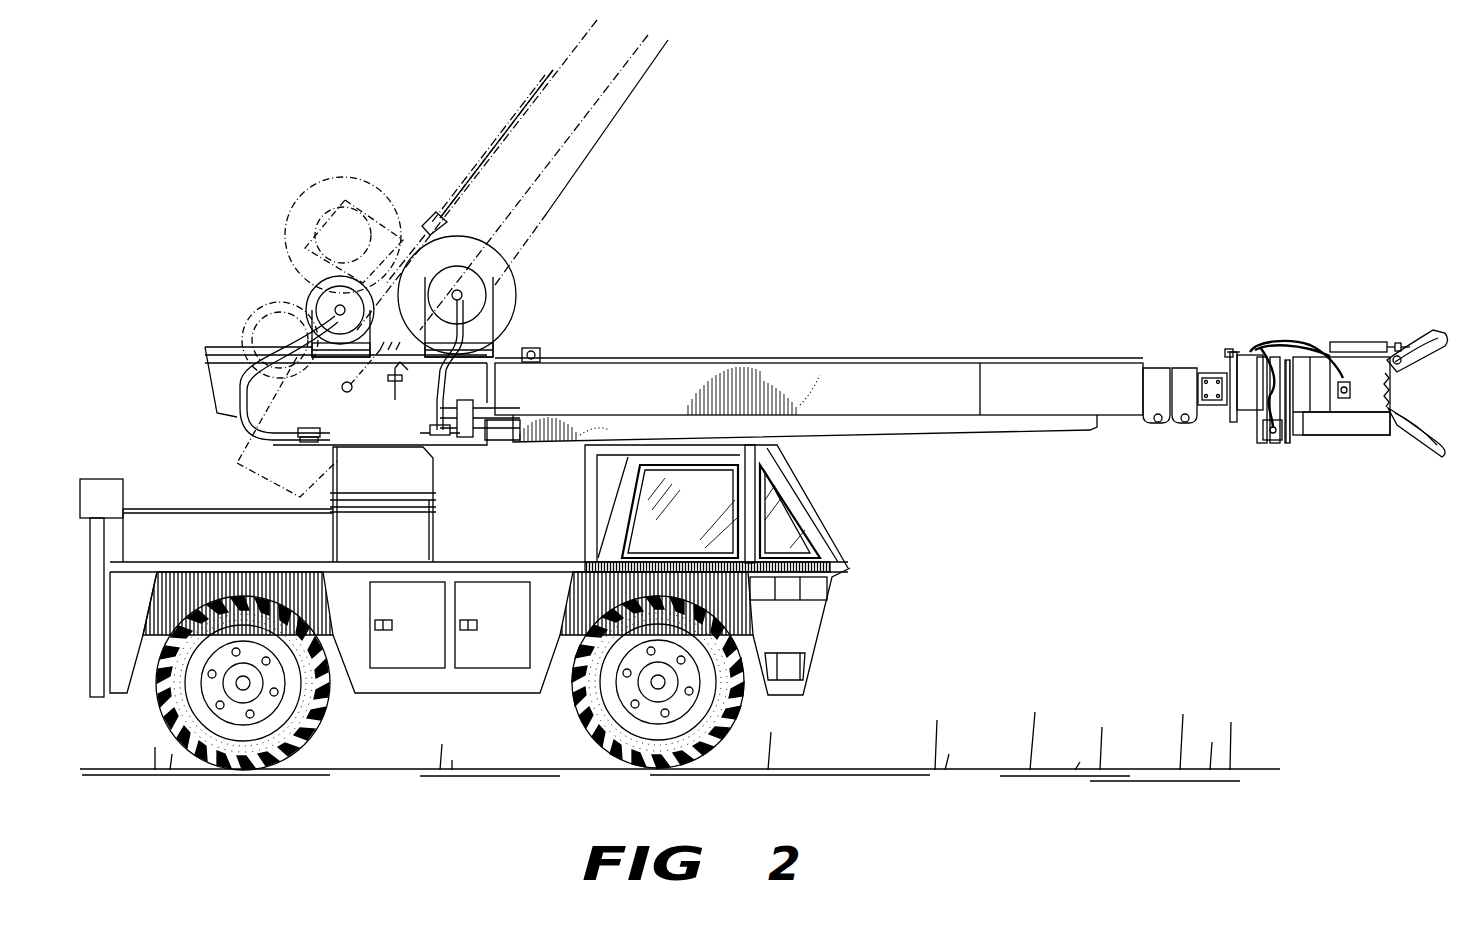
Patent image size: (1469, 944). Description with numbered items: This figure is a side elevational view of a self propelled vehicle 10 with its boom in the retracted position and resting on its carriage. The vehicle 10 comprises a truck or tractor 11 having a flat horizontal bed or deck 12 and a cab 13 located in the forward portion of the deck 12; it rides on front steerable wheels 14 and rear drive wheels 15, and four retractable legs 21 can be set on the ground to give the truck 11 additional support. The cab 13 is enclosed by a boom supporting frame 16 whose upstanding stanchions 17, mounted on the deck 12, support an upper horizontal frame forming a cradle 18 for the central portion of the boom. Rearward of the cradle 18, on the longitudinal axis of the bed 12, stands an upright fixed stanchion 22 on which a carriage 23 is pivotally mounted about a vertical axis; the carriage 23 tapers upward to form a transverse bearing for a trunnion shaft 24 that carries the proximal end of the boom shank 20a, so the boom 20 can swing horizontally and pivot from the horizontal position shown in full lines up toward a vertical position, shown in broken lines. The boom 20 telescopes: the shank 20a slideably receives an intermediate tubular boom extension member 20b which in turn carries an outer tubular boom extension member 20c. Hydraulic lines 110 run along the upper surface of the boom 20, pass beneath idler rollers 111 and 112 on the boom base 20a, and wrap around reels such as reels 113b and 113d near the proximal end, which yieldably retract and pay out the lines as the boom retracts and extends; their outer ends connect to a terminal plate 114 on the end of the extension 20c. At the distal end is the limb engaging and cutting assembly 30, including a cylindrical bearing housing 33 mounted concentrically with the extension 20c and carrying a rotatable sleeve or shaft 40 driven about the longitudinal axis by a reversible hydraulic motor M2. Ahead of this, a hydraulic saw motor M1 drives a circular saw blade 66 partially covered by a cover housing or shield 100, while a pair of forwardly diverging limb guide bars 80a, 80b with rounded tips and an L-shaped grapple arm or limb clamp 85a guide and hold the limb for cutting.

The self propelled vehicle 10 is at (164, 390).
The truck or tractor 11 is at (486, 559).
The flat horizontal bed or deck 12 is at (252, 565).
The cab 13 is at (706, 505).
The front steerable wheels 14 is at (735, 697).
The rear drive wheels 15 is at (318, 718).
The boom supporting frame 16 is at (828, 530).
The upstanding stanchions 17 is at (760, 467).
The cradle 18 is at (722, 444).
The boom 20 is at (619, 376).
The boom shank 20a is at (967, 380).
The intermediate tubular boom extension member 20b is at (1192, 365).
The outer tubular boom extension member 20c is at (1212, 405).
The retractable legs 21 is at (104, 550).
The upright fixed stanchion 22 is at (428, 548).
The carriage 23 is at (428, 488).
The trunnion shaft 24 is at (362, 372).
The limb engaging and cutting assembly 30 is at (1343, 451).
The cylindrical bearing housing 33 is at (1250, 410).
The outer cylindrical sleeve or shaft 40 is at (1305, 375).
The circular saw blade 66 is at (1370, 397).
The limb guide bar 80a is at (1418, 352).
The limb guide bar 80b is at (1412, 430).
The L-shaped grapple arm or limb clamp 85a is at (1403, 345).
The cover housing or shield 100 is at (1350, 345).
The hydraulic lines 110 is at (876, 360).
The idler roller 111 is at (418, 350).
The idler roller 112 is at (538, 347).
The hydraulic reel 113b is at (303, 296).
The hydraulic reel 113d is at (512, 278).
The terminal plate 114 is at (1229, 349).
The hydraulic saw motor M1 is at (1340, 398).
The reversible hydraulic motor M2 is at (1272, 440).